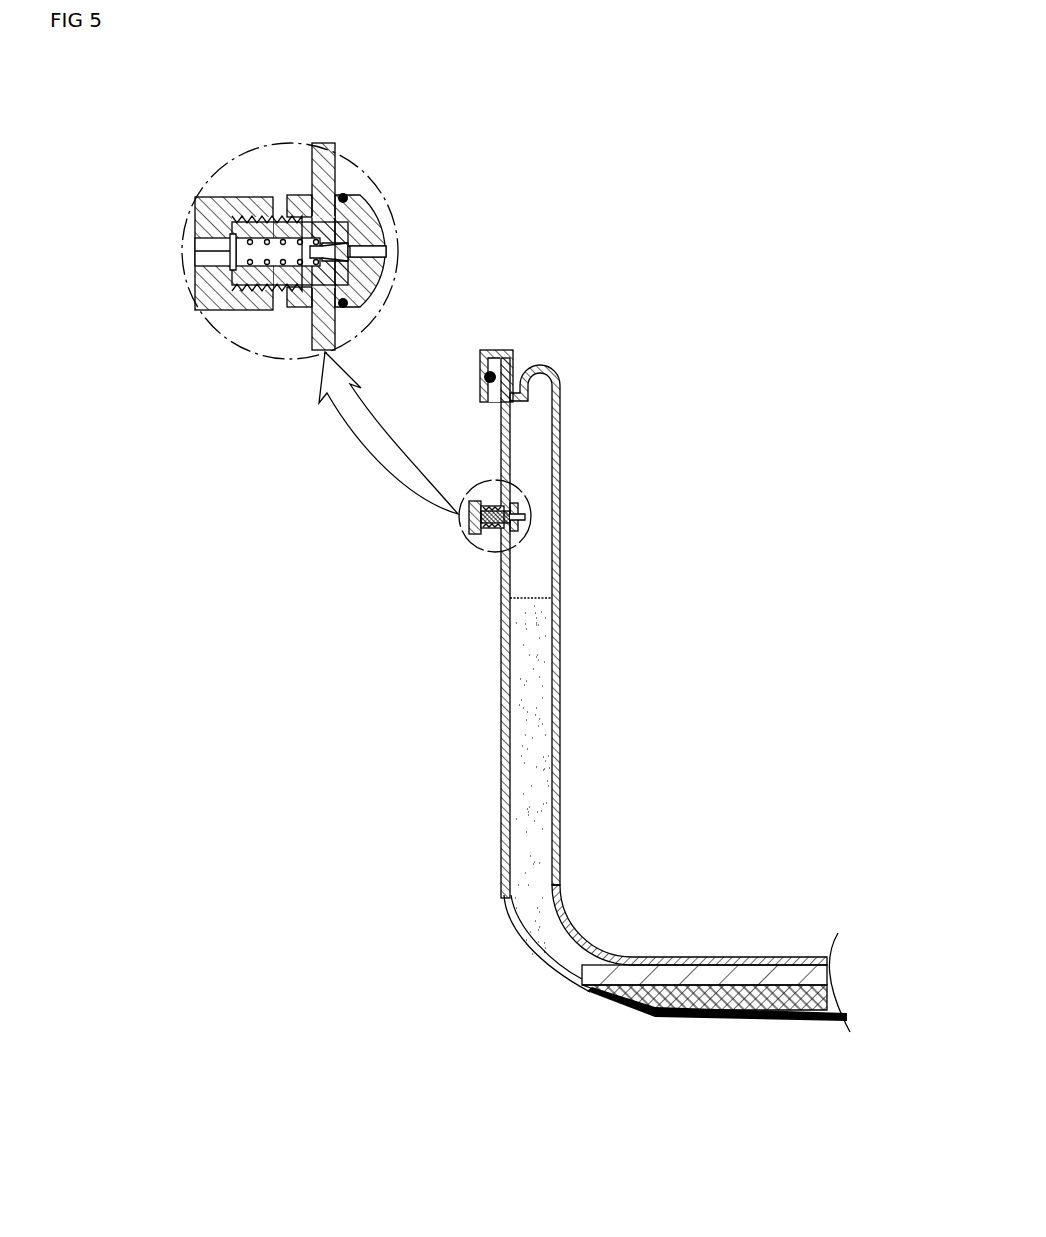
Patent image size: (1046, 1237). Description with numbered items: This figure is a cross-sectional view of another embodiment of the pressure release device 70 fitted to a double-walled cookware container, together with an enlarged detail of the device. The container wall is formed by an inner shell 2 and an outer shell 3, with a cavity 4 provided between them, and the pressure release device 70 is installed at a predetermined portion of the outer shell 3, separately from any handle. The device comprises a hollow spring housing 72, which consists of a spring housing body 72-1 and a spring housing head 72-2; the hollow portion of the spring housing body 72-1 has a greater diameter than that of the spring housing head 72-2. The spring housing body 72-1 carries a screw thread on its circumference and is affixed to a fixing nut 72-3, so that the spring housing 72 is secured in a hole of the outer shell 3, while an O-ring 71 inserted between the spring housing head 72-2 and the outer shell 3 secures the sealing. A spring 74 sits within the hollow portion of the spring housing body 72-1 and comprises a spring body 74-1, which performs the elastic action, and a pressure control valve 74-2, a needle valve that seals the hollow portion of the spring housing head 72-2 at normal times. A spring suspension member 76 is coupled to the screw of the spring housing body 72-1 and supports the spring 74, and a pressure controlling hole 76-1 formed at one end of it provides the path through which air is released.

The inner shell 2 is at (503, 780).
The outer shell 3 is at (555, 778).
The cavity 4 is at (540, 572).
The pressure release device 70 is at (270, 152).
The O-ring 71 is at (340, 312).
The spring housing 72 is at (323, 267).
The spring housing body 72-1 is at (290, 305).
The spring housing head 72-2 is at (348, 306).
The fixing nut 72-3 is at (288, 190).
The spring 74 is at (313, 297).
The spring body 74-1 is at (240, 305).
The pressure control valve 74-2 is at (355, 250).
The spring suspension member 76 is at (173, 222).
The pressure controlling hole 76-1 is at (207, 252).